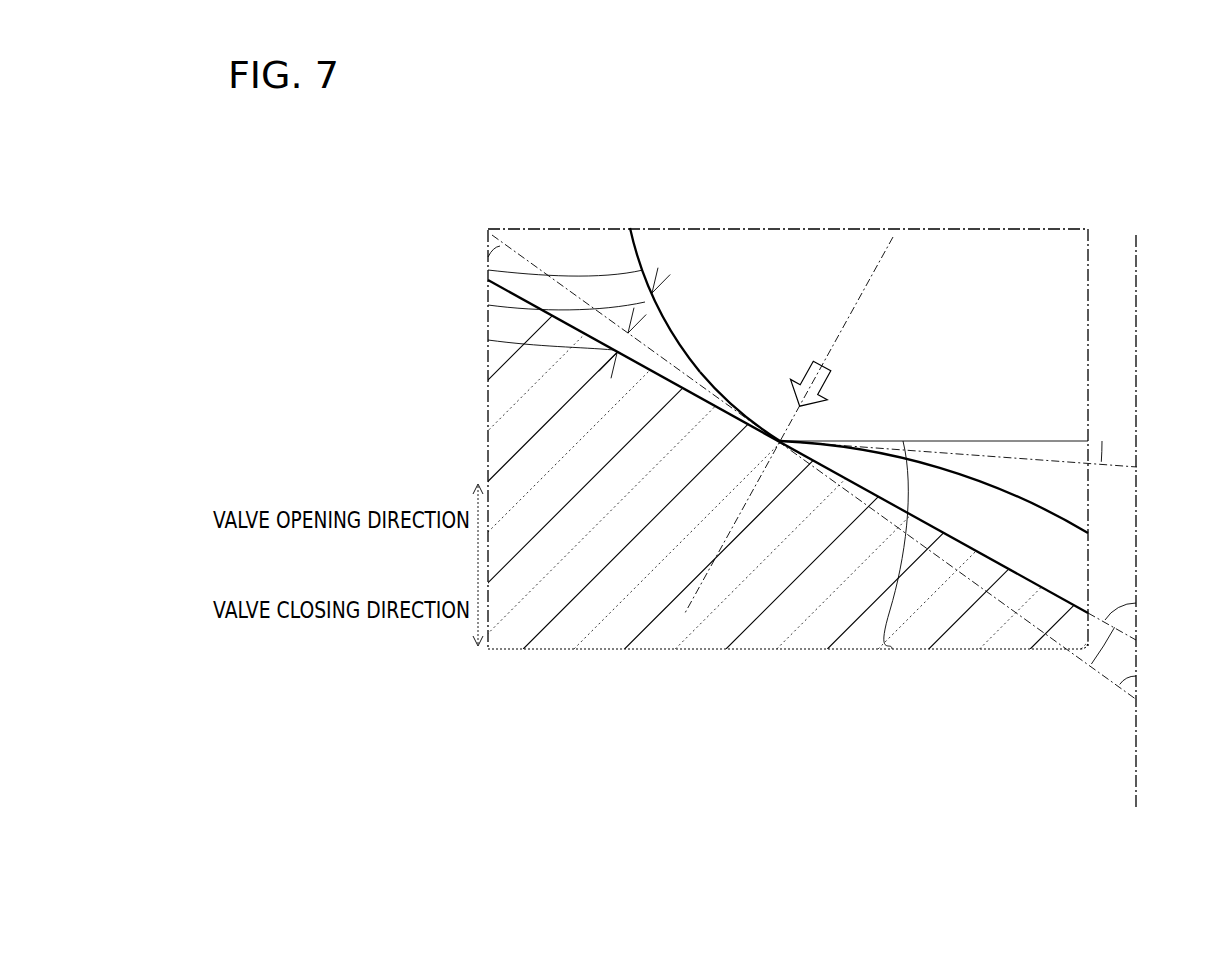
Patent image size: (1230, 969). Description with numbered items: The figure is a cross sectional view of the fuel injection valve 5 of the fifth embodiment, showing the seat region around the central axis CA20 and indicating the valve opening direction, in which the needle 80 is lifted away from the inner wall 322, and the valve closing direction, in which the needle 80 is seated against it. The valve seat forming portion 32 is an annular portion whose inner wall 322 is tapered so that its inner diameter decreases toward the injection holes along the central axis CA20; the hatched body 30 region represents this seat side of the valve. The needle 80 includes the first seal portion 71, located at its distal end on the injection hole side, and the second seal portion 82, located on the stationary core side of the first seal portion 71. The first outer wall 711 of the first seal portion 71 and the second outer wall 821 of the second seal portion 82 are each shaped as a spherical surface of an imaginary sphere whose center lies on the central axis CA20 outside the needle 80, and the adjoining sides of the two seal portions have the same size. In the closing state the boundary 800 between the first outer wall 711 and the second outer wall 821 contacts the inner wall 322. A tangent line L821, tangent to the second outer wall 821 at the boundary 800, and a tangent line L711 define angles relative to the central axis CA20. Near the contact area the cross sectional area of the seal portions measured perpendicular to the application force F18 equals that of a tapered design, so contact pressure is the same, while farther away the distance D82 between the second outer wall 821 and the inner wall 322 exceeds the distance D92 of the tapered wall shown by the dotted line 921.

The fuel injection valve 5 is at (1100, 222).
The valve body (needle) 30 is at (484, 434).
The valve seat forming portion 32 is at (515, 405).
The inner wall 322 is at (522, 300).
The first seal portion 71 is at (993, 470).
The first outer wall 711 is at (973, 480).
The needle 80 is at (898, 222).
The second seal portion 82 is at (948, 272).
The boundary 800 is at (892, 649).
The second outer wall 821 is at (488, 270).
The dotted line 921 is at (488, 256).
The distance D82 is at (488, 305).
The distance D92 is at (488, 340).
The central axis CA20 is at (1137, 256).
The tangent line L711 is at (1098, 460).
The tangent line L821 is at (1120, 630).
The application force F18 is at (810, 372).